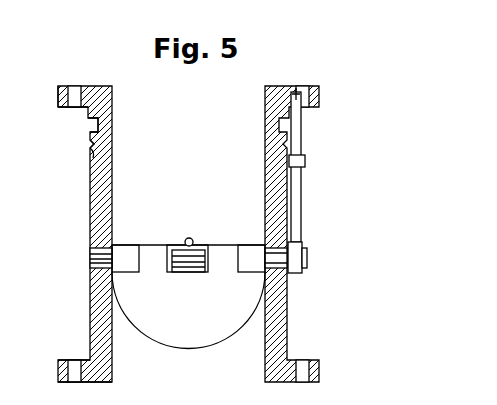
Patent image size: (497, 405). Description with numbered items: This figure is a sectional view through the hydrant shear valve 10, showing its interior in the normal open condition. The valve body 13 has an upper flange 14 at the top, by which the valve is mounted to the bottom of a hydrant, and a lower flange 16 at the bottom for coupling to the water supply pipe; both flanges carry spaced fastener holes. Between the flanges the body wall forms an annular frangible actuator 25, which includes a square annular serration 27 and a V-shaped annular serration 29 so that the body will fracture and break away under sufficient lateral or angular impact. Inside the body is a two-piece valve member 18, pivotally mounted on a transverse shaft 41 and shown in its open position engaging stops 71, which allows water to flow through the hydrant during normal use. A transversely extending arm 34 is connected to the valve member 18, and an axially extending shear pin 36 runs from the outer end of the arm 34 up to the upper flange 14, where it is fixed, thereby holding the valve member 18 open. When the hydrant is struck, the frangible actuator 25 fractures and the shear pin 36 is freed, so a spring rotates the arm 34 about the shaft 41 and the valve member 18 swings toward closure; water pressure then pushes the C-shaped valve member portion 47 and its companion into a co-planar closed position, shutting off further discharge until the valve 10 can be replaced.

The hydrant shear valve 10 is at (328, 271).
The valve body 13 is at (90, 263).
The upper flange 14 is at (58, 96).
The lower flange 16 is at (68, 360).
The valve member 18 is at (112, 300).
The frangible actuator 25 is at (80, 143).
The square annular serration 27 is at (92, 127).
The V-shaped annular serration 29 is at (96, 147).
The arm 34 is at (307, 258).
The shear pin 36 is at (302, 131).
The shaft 41 is at (302, 245).
The C-shaped valve member portion 47 is at (256, 311).
The stops 71 is at (192, 239).